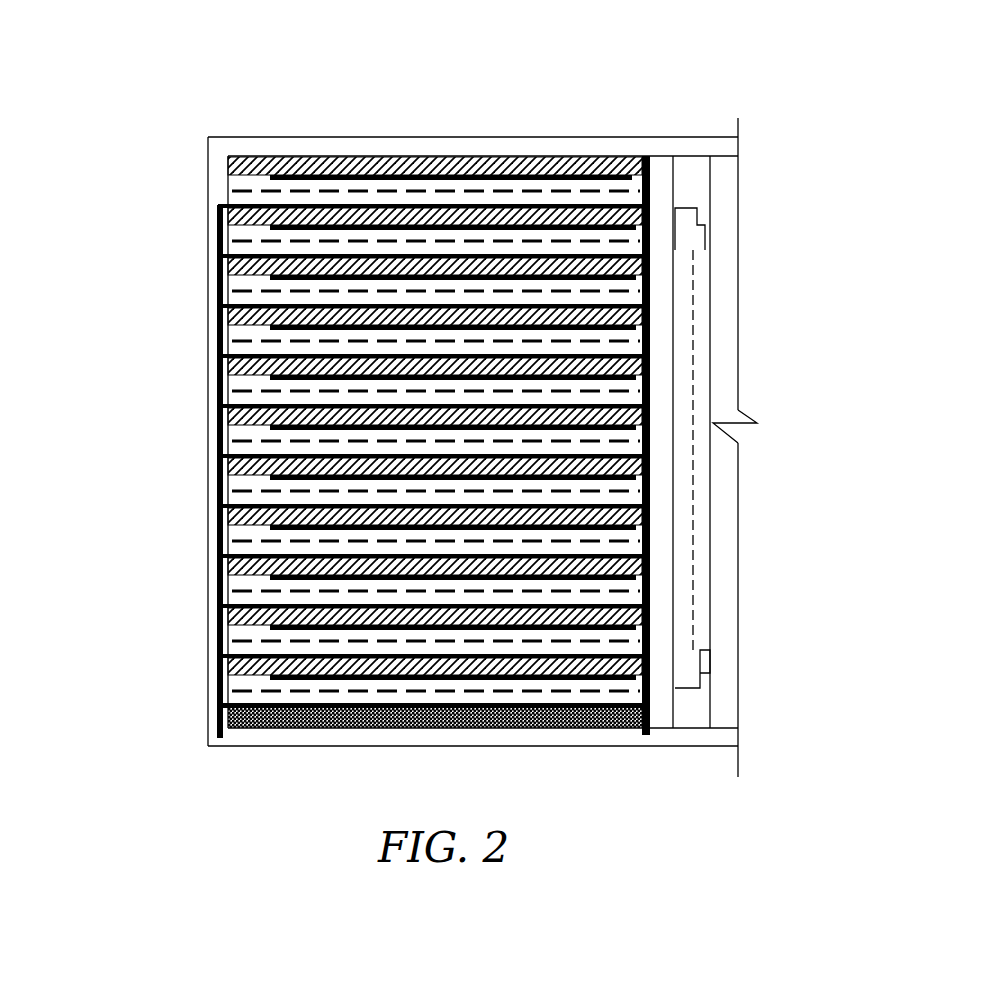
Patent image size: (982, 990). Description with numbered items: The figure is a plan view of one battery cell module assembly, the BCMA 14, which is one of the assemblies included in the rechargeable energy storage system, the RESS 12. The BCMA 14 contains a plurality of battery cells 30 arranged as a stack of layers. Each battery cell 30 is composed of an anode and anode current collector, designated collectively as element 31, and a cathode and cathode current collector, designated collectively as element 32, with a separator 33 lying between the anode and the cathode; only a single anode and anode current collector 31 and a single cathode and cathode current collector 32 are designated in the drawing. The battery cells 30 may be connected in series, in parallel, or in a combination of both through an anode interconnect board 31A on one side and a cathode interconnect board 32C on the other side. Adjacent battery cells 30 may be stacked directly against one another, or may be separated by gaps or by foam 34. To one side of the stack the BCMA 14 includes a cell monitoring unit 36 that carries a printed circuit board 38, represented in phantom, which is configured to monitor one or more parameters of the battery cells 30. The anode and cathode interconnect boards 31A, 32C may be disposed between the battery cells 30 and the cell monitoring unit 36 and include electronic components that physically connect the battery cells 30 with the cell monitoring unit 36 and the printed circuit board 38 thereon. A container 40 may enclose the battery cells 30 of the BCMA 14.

The RESS 12 is at (287, 102).
The BCMA 14 is at (399, 133).
The battery cells 30 is at (242, 390).
The anode and anode current collector 31 is at (482, 172).
The anode interconnect board 31A is at (652, 190).
The cathode and cathode current collector 32 is at (250, 718).
The cathode interconnect board 32C is at (222, 699).
The separator 33 is at (390, 338).
The foam 34 is at (628, 367).
The cell monitoring unit 36 is at (690, 362).
The printed circuit board 38 is at (697, 382).
The container 40 is at (447, 146).